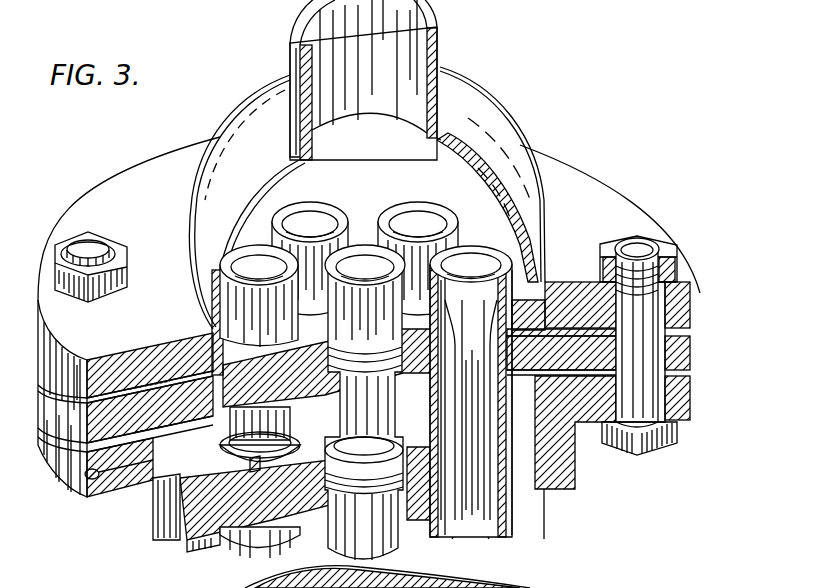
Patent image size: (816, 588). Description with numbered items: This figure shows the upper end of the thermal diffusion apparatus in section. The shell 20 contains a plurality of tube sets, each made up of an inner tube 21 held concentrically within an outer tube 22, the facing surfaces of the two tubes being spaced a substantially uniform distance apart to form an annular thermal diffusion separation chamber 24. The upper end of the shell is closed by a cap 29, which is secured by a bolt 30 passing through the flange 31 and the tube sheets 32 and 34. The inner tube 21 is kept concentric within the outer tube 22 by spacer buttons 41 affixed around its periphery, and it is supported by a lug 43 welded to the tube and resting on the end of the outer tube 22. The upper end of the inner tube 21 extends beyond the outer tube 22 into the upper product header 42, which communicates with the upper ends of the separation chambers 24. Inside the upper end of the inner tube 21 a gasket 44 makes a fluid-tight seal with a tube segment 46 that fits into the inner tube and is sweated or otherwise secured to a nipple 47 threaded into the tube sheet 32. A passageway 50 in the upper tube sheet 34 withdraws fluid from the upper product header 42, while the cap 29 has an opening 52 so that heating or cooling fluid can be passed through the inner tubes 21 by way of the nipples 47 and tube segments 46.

The shell 20 is at (546, 530).
The inner tube 21 is at (352, 432).
The outer tube 22 is at (280, 537).
The thermal diffusion separation chamber 24 is at (512, 551).
The cap 29 is at (466, 118).
The bolt 30 is at (671, 278).
The flange 31 is at (681, 306).
The tube sheet 32 is at (681, 350).
The tube sheet 34 is at (681, 396).
The button 41 is at (546, 490).
The upper product header 42 is at (286, 418).
The lug 43 is at (187, 520).
The gasket 44 is at (462, 400).
The tube segment 46 is at (462, 432).
The nipple 47 is at (298, 212).
The passageway 50 is at (117, 469).
The opening 52 is at (398, 91).